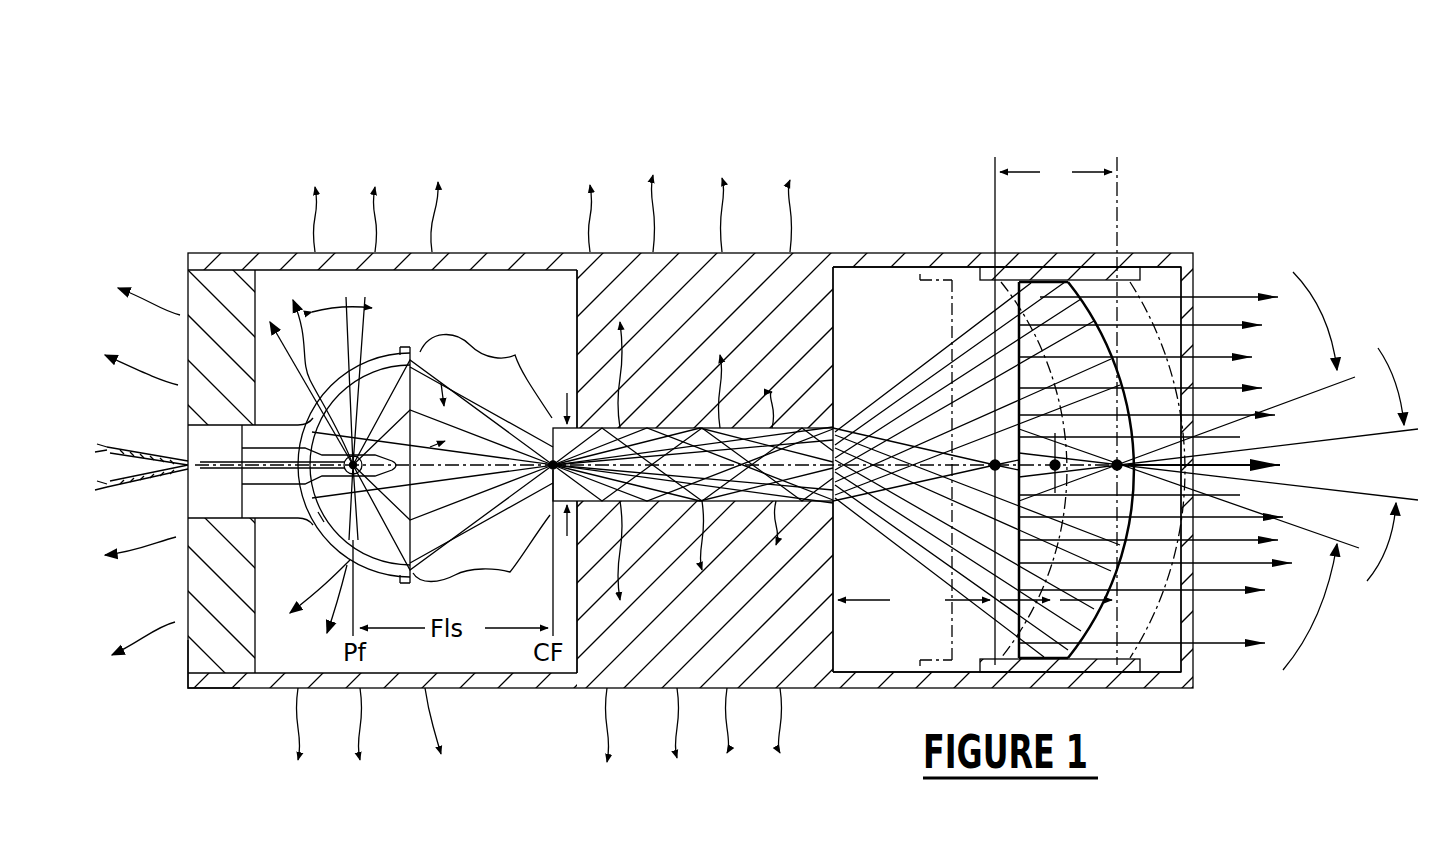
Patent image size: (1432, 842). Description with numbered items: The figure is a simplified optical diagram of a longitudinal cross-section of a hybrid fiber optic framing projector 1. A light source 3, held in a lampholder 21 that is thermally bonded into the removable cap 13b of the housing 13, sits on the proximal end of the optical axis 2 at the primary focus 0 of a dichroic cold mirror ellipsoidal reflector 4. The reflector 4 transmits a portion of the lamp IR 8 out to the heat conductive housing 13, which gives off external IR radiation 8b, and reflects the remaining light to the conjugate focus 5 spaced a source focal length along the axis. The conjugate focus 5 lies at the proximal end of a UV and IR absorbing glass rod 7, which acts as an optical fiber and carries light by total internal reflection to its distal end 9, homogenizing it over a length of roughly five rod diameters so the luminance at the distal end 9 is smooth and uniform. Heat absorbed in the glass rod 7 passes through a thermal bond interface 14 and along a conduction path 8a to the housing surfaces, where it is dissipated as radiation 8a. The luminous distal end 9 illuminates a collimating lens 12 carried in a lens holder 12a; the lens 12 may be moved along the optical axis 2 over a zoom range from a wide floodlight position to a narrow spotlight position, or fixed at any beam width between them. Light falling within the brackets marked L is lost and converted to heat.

The hybrid fiber optic framing projector 1 is at (499, 240).
The optical axis 2 is at (593, 470).
The light source 3 is at (292, 480).
The ellipsoidal reflector 4 is at (363, 418).
The conjugate focus 5 is at (403, 470).
The glass rod 7 is at (683, 435).
The lamp IR 8 is at (302, 338).
The conduction path 8a is at (622, 345).
The external IR radiation 8b is at (435, 215).
The distal end 9 is at (838, 440).
The collimating lens 12 is at (1037, 267).
The lens holder 12a is at (1125, 266).
The housing 13 is at (235, 253).
The cap 13b is at (180, 657).
The thermal bond interface 14 is at (638, 422).
The lampholder 21 is at (187, 445).
The primary focus 0 is at (322, 520).